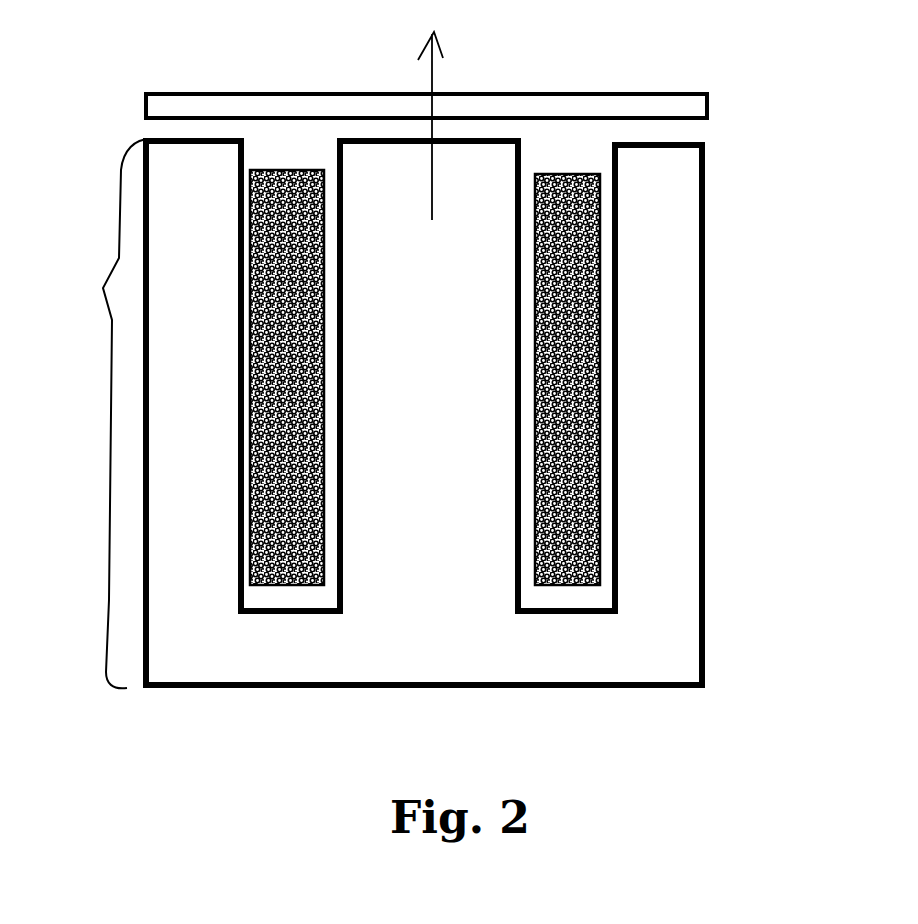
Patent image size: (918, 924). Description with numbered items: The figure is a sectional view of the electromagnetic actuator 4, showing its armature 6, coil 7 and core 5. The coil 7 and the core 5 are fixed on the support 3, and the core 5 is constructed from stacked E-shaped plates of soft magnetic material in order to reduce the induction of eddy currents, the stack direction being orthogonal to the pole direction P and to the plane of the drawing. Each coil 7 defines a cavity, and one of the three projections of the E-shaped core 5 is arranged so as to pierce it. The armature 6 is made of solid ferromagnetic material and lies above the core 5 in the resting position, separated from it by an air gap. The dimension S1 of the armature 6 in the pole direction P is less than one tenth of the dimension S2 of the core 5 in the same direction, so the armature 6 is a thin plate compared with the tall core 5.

The support 3 is at (727, 136).
The electromagnetic actuator 4 is at (810, 231).
The core 5 is at (424, 413).
The armature 6 is at (426, 106).
The coil 7 is at (250, 530).
The dimension of the armature in the pole direction S1 is at (114, 106).
The dimension of the core in the pole direction S2 is at (101, 413).
The pole direction P is at (445, 124).